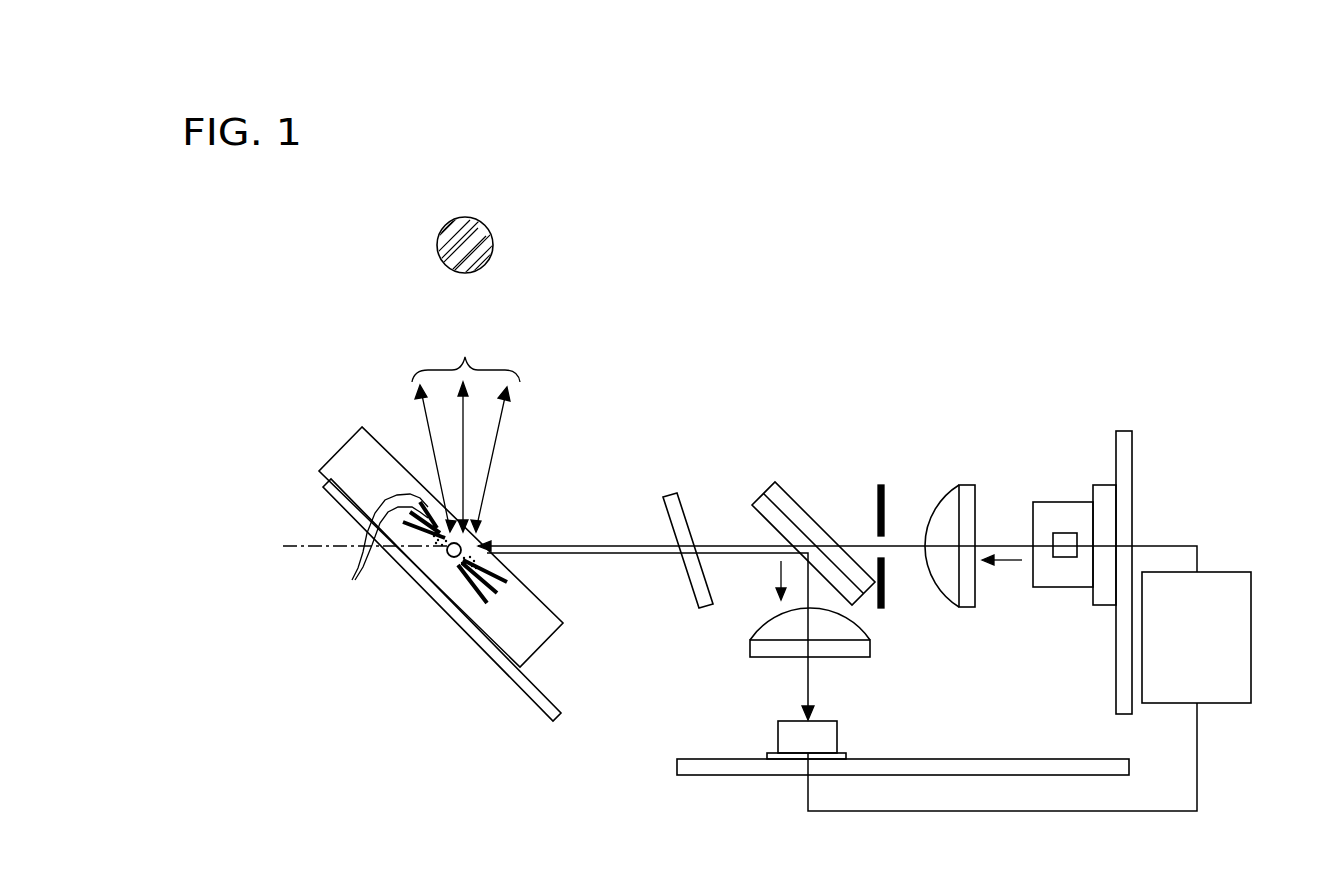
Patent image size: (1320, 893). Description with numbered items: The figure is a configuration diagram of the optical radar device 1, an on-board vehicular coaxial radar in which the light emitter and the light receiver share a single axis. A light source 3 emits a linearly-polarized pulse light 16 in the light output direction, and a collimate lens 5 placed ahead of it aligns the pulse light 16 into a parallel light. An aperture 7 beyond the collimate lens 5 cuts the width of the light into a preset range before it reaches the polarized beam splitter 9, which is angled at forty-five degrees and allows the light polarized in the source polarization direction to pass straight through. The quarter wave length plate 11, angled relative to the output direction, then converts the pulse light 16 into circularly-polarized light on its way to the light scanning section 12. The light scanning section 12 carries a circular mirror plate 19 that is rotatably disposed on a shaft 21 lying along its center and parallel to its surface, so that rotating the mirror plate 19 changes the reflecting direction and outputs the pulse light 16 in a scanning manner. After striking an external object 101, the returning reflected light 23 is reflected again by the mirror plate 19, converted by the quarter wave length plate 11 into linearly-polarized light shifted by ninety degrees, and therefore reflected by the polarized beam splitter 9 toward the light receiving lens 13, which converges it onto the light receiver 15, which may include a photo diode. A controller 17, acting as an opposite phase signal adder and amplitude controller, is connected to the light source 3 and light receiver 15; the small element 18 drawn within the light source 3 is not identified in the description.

The optical radar device 1 is at (1225, 410).
The object 101 is at (492, 237).
The light source 3 is at (1060, 502).
The collimate lens 5 is at (967, 485).
The aperture 7 is at (887, 487).
The polarized beam splitter 9 is at (778, 485).
The λ/4 board 11 is at (668, 495).
The light scanning section 12 is at (475, 640).
The light receiving lens 13 is at (872, 641).
The light receiver 15 is at (778, 737).
The pulse light 16 is at (433, 442).
The controller 17 is at (1222, 572).
The light emitting element 18 is at (1065, 558).
The mirror plate 19 is at (375, 543).
The shaft 21 is at (436, 568).
The reflected light 23 is at (648, 555).